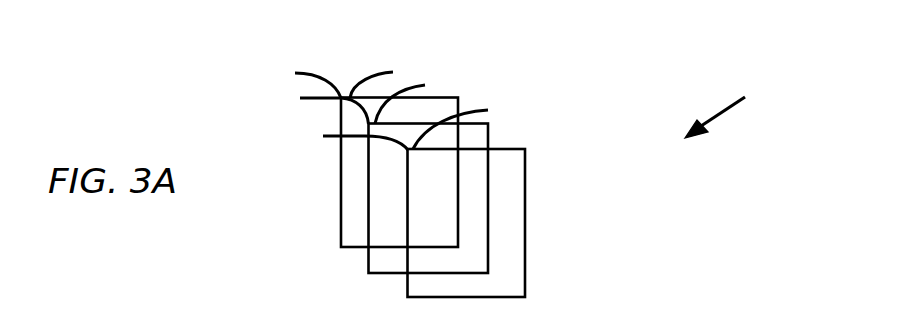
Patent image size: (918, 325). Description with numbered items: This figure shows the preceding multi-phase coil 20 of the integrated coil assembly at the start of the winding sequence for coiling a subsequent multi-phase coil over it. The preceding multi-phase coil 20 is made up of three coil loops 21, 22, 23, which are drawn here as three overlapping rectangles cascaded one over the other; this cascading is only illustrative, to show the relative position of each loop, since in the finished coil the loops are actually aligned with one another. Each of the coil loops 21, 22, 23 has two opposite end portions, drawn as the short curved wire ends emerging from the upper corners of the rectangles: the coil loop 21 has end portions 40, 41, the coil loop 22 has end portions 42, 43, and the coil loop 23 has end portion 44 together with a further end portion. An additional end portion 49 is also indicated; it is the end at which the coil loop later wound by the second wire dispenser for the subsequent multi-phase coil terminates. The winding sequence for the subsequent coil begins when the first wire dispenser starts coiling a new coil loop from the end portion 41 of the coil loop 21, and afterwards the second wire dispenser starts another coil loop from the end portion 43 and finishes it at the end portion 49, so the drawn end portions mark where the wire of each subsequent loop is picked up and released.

The preceding multi-phase coil 20 is at (739, 105).
The coil loop 21 is at (341, 190).
The coil loop 22 is at (368, 257).
The coil loop 23 is at (527, 234).
The end portion 40 is at (303, 73).
The end portion 41 is at (373, 72).
The end portion 42 is at (317, 98).
The end portion 43 is at (397, 88).
The end portion 44 is at (332, 136).
The end portion 49 is at (460, 113).